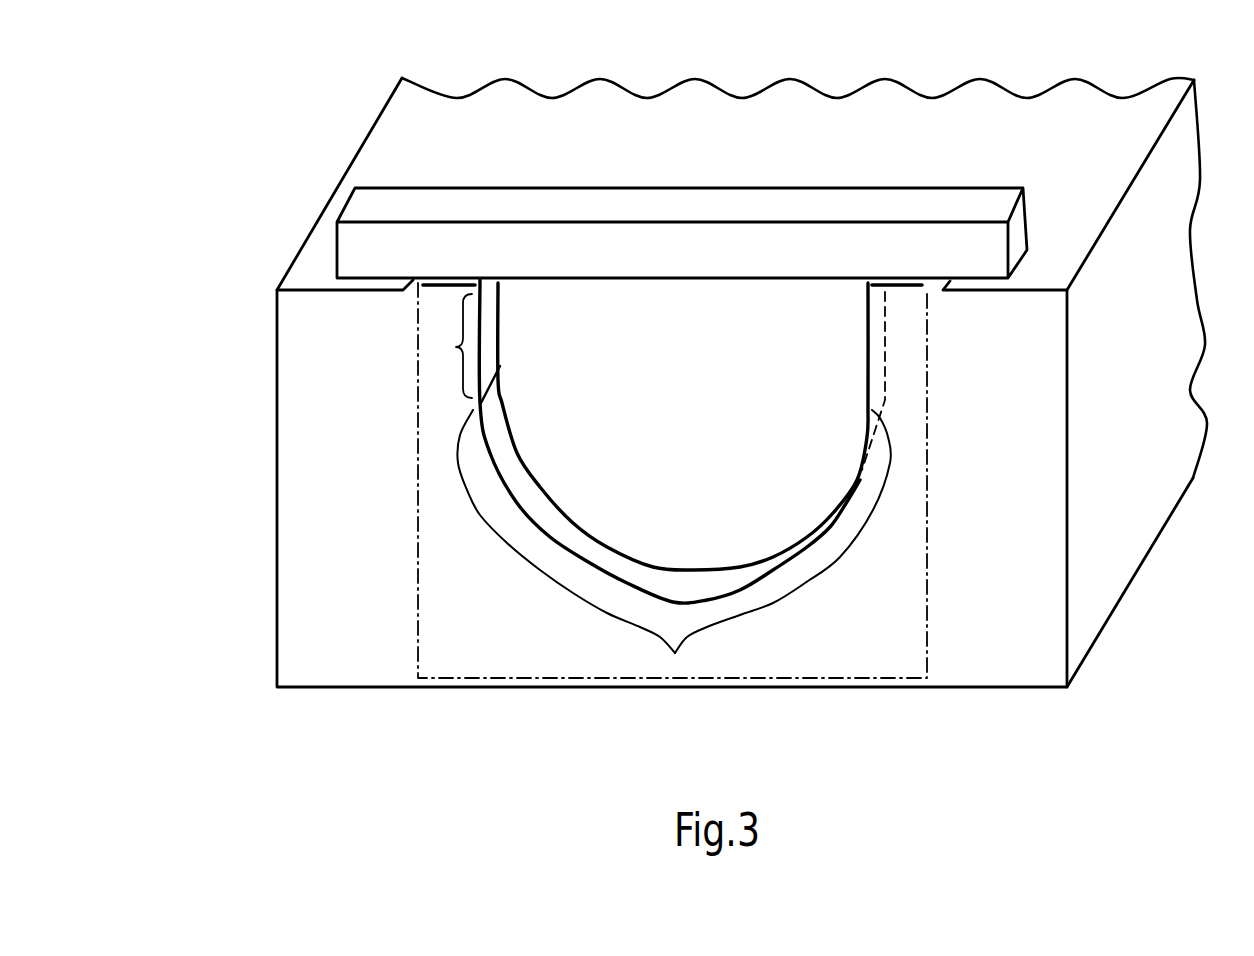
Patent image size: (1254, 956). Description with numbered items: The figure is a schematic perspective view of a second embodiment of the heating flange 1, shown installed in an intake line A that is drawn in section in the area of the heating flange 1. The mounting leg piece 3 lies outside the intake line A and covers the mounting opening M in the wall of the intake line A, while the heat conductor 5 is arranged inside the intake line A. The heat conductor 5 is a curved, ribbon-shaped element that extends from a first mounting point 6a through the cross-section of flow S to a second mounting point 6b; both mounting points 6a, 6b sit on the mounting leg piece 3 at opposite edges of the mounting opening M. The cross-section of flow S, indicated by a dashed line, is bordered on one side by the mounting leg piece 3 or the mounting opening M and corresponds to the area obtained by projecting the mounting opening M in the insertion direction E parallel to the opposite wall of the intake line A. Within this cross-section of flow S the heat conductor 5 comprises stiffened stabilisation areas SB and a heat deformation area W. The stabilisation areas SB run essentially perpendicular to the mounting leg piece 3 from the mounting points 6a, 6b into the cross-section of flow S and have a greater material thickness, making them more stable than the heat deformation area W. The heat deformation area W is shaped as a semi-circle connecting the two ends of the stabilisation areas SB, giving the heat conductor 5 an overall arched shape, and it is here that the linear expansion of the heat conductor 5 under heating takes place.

The heating flange 1 is at (826, 126).
The mounting leg piece 3 is at (997, 242).
The heat conductor 5 is at (837, 517).
The first mounting point 6a is at (448, 296).
The second mounting point 6b is at (895, 303).
The intake line A is at (372, 152).
The insertion direction E is at (162, 556).
The mounting opening M is at (679, 307).
The stabilisation areas SB is at (458, 347).
The cross-section of flow S is at (843, 657).
The heat deformation area W is at (674, 653).